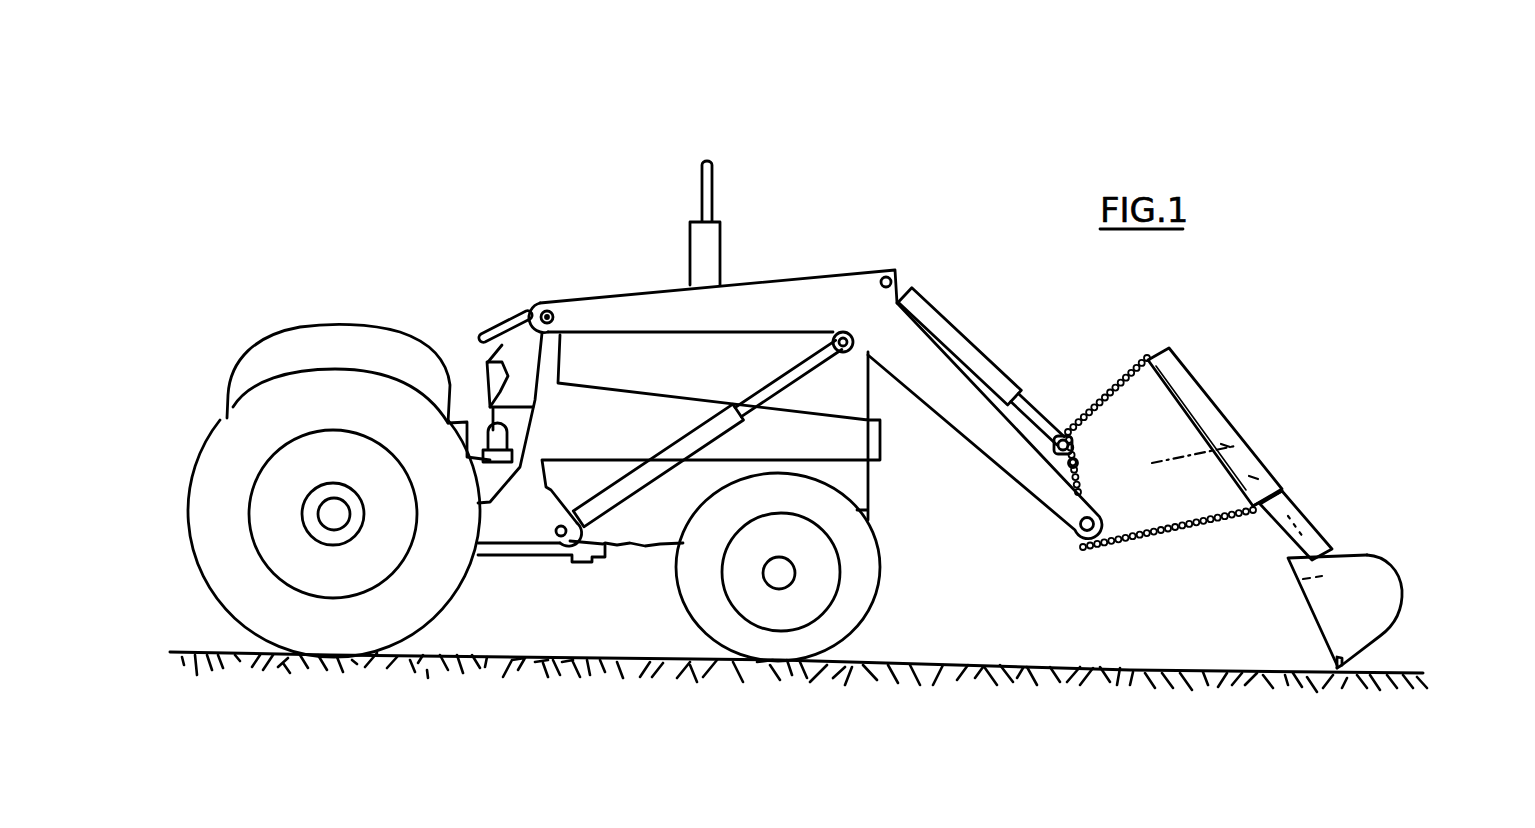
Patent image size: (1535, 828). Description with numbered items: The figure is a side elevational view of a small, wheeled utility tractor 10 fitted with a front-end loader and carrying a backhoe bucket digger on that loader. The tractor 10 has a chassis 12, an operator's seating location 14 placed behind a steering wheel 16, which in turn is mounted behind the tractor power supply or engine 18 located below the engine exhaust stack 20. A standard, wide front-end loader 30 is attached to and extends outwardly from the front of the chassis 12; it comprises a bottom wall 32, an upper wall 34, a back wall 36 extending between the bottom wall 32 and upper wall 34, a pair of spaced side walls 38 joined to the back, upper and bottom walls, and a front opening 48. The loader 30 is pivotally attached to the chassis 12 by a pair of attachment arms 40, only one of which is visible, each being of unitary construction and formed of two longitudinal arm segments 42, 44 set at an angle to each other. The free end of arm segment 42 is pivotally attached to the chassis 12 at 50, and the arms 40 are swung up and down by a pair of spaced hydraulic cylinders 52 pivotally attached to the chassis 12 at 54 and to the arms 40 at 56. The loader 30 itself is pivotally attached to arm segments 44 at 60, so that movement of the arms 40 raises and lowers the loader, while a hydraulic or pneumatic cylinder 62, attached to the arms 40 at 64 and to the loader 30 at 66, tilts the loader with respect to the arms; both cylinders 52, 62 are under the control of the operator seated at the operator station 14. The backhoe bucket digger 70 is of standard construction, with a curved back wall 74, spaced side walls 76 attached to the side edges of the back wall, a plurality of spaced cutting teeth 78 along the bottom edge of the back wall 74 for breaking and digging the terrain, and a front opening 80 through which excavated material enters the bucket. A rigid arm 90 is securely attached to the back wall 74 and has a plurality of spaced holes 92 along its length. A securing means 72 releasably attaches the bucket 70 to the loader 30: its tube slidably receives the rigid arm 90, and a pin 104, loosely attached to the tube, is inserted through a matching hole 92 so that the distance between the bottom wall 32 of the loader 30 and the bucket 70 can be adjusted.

The utility tractor 10 is at (490, 157).
The chassis 12 is at (560, 560).
The operator's seating location 14 is at (443, 347).
The steering wheel 16 is at (523, 307).
The engine 18 is at (692, 390).
The engine exhaust stack 20 is at (722, 237).
The front-end loader 30 is at (1160, 368).
The bottom wall 32 is at (1172, 540).
The upper wall 34 is at (1108, 396).
The back wall 36 is at (1080, 458).
The side walls 38 is at (1152, 518).
The attachment arms 40 is at (867, 268).
The arm segment 42 is at (670, 310).
The arm segment 44 is at (1007, 453).
The front opening 48 is at (1238, 437).
The pivotal attachment 50 is at (553, 306).
The hydraulic cylinders 52 is at (703, 437).
The cylinder attachment 54 is at (557, 528).
The cylinder attachment 56 is at (838, 333).
The loader pivot 60 is at (1075, 535).
The hydraulic or pneumatic cylinder 62 is at (953, 323).
The cylinder attachment 64 is at (900, 272).
The cylinder attachment 66 is at (1063, 435).
The backhoe bucket digger 70 is at (1393, 562).
The securing means 72 is at (1230, 408).
The back wall 74 is at (1403, 590).
The side walls 76 is at (1362, 612).
The cutting teeth 78 is at (1333, 661).
The front opening 80 is at (1300, 578).
The rigid arm 90 is at (1308, 521).
The holes 92 is at (1287, 494).
The pin 104 is at (1256, 478).